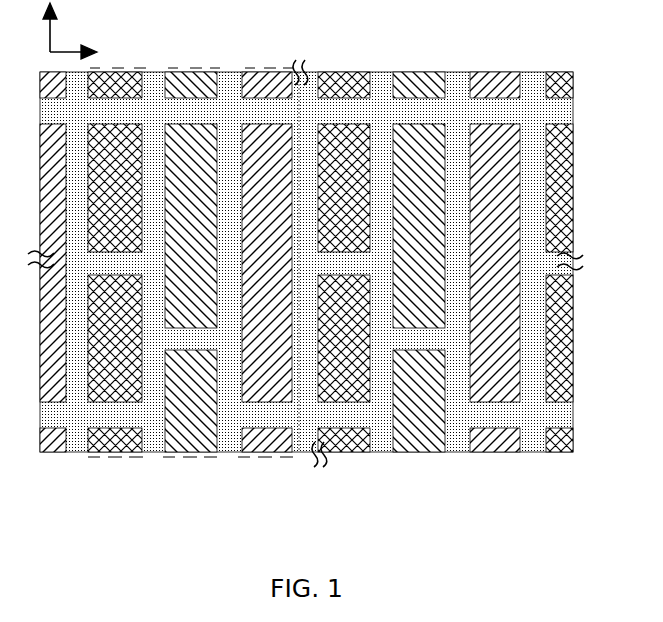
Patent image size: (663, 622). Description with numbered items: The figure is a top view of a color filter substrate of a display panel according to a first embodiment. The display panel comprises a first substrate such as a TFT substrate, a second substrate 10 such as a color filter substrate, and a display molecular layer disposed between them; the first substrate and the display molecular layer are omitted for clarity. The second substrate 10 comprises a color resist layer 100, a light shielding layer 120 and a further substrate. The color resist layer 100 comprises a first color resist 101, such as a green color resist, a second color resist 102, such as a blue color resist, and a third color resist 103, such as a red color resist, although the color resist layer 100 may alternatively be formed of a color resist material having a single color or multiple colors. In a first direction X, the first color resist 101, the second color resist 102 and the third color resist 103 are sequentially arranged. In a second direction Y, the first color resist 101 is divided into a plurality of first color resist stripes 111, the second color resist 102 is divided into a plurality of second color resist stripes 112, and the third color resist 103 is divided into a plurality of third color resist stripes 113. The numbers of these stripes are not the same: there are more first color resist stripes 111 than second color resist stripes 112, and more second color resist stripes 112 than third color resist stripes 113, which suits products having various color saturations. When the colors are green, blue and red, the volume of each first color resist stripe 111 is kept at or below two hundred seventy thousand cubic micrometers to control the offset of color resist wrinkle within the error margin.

The second substrate 10 is at (305, 262).
The color resist layer 100 is at (308, 255).
The first color resist 101 is at (330, 291).
The second color resist 102 is at (305, 291).
The third color resist 103 is at (280, 291).
The first color resist stripe 111 is at (130, 195).
The second color resist stripe 112 is at (207, 233).
The third color resist stripe 113 is at (283, 271).
The light shielding layer 120 is at (530, 446).